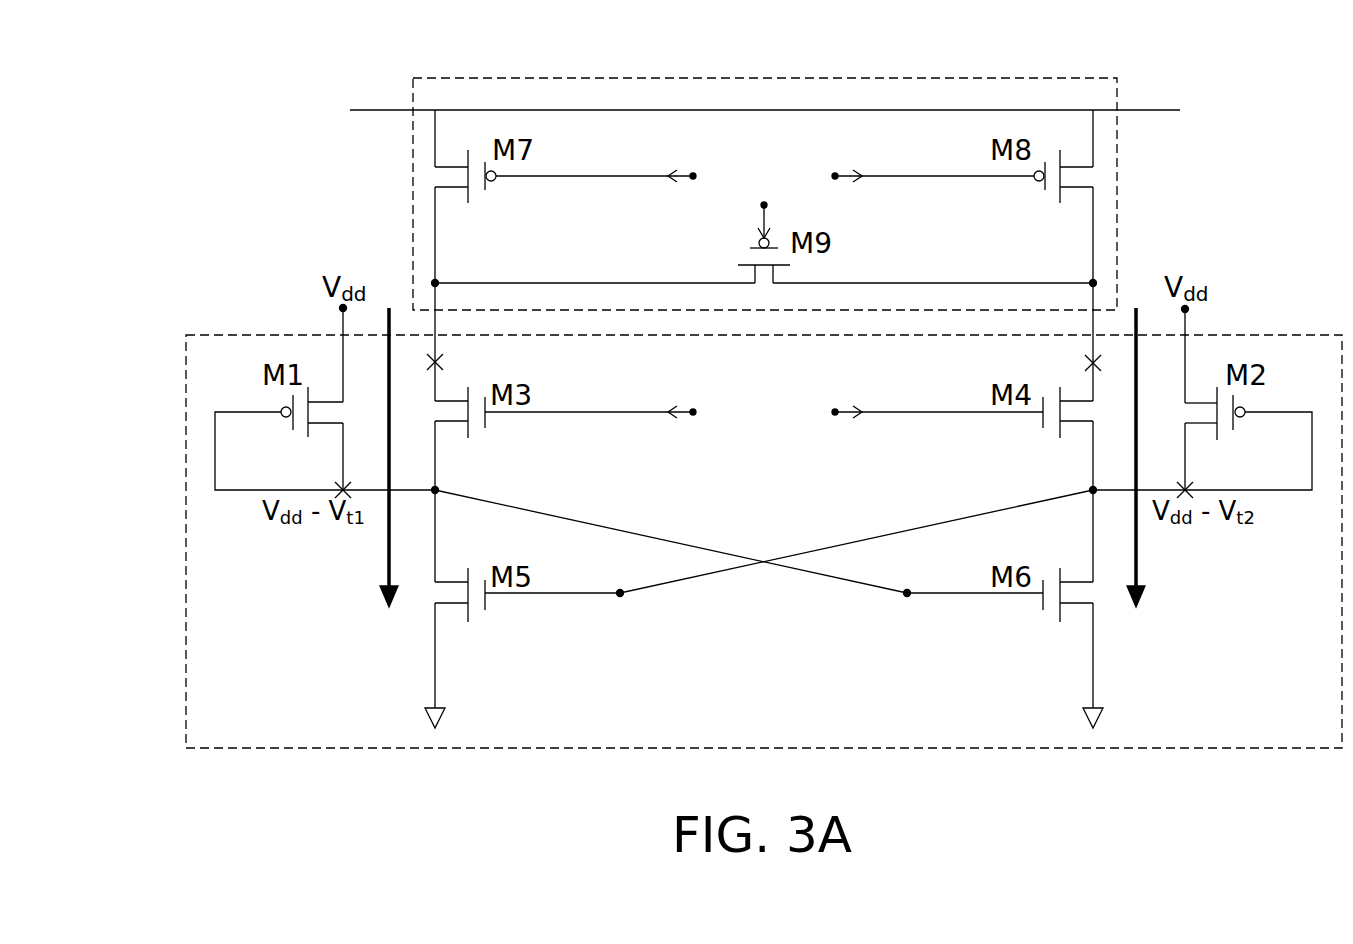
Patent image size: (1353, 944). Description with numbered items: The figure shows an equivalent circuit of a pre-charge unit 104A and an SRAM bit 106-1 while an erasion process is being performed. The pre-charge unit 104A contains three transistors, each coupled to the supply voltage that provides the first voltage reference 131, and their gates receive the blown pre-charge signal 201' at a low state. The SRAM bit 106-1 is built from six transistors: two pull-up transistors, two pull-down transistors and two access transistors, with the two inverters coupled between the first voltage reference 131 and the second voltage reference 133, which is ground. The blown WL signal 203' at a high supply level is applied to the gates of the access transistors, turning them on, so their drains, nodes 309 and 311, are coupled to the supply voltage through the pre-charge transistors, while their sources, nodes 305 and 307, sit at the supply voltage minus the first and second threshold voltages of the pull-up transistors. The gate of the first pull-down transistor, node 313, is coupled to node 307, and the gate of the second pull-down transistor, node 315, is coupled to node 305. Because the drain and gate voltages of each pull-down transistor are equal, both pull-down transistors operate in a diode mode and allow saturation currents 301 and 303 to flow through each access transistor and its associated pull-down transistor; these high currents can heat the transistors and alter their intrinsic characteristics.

The first voltage reference 131 is at (1145, 110).
The pre-charge unit 104A is at (1120, 179).
The blown pre-charge signal 201' is at (765, 176).
The blown WL signal 203' is at (764, 411).
The SRAM bit 106-1 is at (1308, 333).
The saturation current 301 is at (366, 457).
The saturation current 303 is at (1165, 457).
The source node of access transistor M3 305 is at (318, 477).
The source node of access transistor M4 307 is at (1214, 477).
The drain node of access transistor M3 309 is at (464, 342).
The drain node of access transistor M4 311 is at (1068, 342).
The gate node of pull-down transistor M5 313 is at (789, 560).
The gate node of pull-down transistor M6 315 is at (739, 560).
The second voltage reference 133 is at (768, 713).